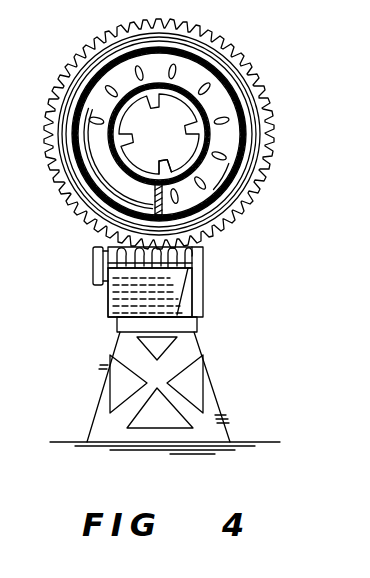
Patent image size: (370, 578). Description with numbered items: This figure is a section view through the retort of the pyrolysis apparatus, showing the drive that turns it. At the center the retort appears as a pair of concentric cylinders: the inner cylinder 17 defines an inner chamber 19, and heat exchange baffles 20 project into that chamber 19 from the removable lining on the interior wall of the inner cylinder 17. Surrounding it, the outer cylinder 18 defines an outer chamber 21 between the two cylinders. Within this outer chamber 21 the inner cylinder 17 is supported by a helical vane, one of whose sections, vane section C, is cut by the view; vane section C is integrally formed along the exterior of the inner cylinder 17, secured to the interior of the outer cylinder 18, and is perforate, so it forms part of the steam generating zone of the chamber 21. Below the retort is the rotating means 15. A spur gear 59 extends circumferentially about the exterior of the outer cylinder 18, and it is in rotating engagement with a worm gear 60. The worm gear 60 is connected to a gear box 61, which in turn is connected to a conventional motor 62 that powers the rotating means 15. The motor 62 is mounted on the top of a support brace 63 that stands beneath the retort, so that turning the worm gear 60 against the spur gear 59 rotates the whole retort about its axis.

The rotating means 15 is at (90, 243).
The inner cylinder 17 is at (207, 112).
The outer cylinder 18 is at (245, 135).
The inner chamber 19 is at (187, 105).
The heat exchange baffles 20 is at (188, 160).
The outer chamber 21 is at (103, 188).
The spur gear 59 is at (238, 226).
The worm gear 60 is at (123, 255).
The gear box 61 is at (101, 277).
The motor 62 is at (118, 302).
The support brace 63 is at (107, 364).
The vane section C is at (222, 178).